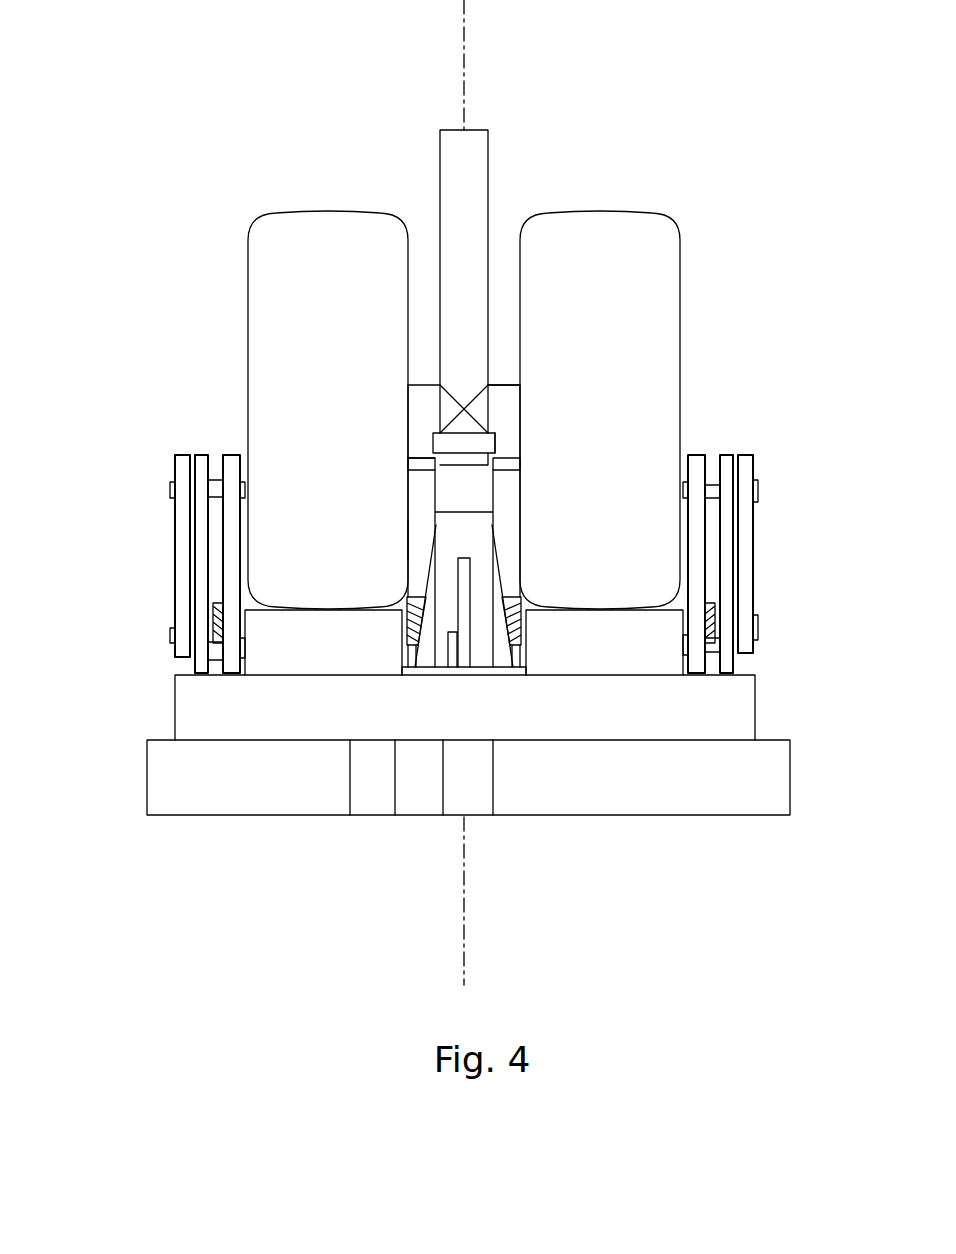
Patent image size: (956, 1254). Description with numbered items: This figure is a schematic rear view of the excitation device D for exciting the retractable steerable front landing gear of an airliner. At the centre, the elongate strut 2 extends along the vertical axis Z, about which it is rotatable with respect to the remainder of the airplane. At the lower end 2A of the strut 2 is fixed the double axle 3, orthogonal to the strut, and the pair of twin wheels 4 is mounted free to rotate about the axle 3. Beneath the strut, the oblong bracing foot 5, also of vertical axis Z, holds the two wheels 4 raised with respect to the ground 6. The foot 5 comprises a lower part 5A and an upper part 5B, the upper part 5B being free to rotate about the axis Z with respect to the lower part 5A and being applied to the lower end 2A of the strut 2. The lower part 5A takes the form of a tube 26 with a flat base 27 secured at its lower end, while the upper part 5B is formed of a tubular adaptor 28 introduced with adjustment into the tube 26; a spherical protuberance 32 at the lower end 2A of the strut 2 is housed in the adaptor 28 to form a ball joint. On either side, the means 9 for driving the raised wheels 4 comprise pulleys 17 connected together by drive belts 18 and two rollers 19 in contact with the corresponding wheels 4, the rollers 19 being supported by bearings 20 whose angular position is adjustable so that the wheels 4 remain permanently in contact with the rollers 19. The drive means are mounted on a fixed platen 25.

The strut 2 is at (480, 232).
The lower end 2A is at (448, 428).
The double axle 3 is at (502, 403).
The twin wheels 4 is at (288, 238).
The bracing foot 5 is at (404, 563).
The lower part 5A is at (428, 497).
The upper part 5B is at (426, 450).
The ground 6 is at (198, 775).
The means for driving 9 is at (768, 558).
The pulleys 17 is at (175, 475).
The drive belts 18 is at (207, 525).
The rollers 19 is at (330, 652).
The bearings 20 is at (228, 567).
The fixed platen 25 is at (727, 707).
The tube 26 is at (493, 492).
The flat base 27 is at (467, 675).
The adaptor 28 is at (496, 443).
The protuberance 32 is at (465, 430).
The excitation device D is at (168, 233).
The vertical axis Z is at (465, 22).